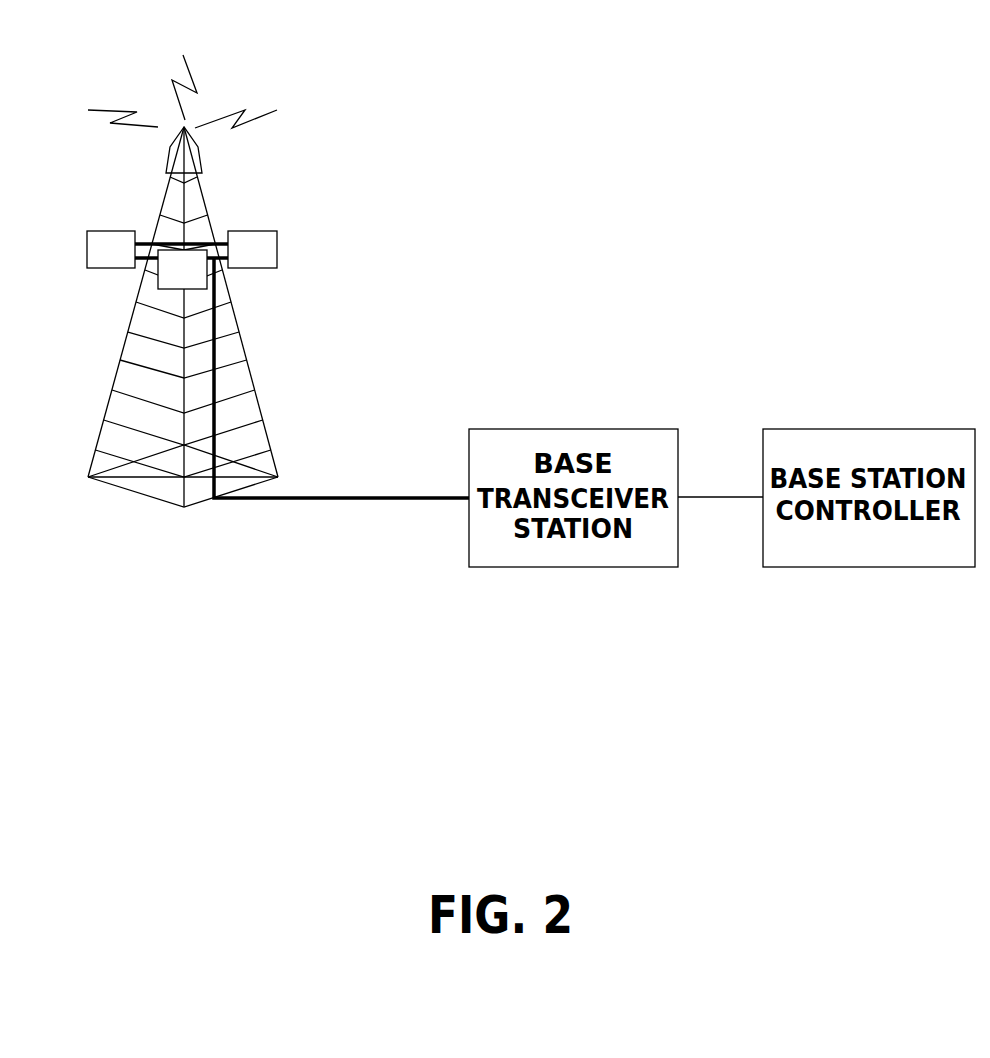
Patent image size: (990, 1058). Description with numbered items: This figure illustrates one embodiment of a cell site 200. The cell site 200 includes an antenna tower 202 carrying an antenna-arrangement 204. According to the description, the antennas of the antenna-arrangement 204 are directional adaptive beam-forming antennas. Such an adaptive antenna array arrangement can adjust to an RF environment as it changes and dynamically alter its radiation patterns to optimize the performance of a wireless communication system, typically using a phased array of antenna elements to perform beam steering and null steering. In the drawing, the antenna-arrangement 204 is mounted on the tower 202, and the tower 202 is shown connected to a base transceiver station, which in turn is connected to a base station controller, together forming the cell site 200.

The wireless communication system 200 is at (531, 311).
The antenna tower 202 is at (251, 373).
The antenna-arrangement 204 is at (278, 348).